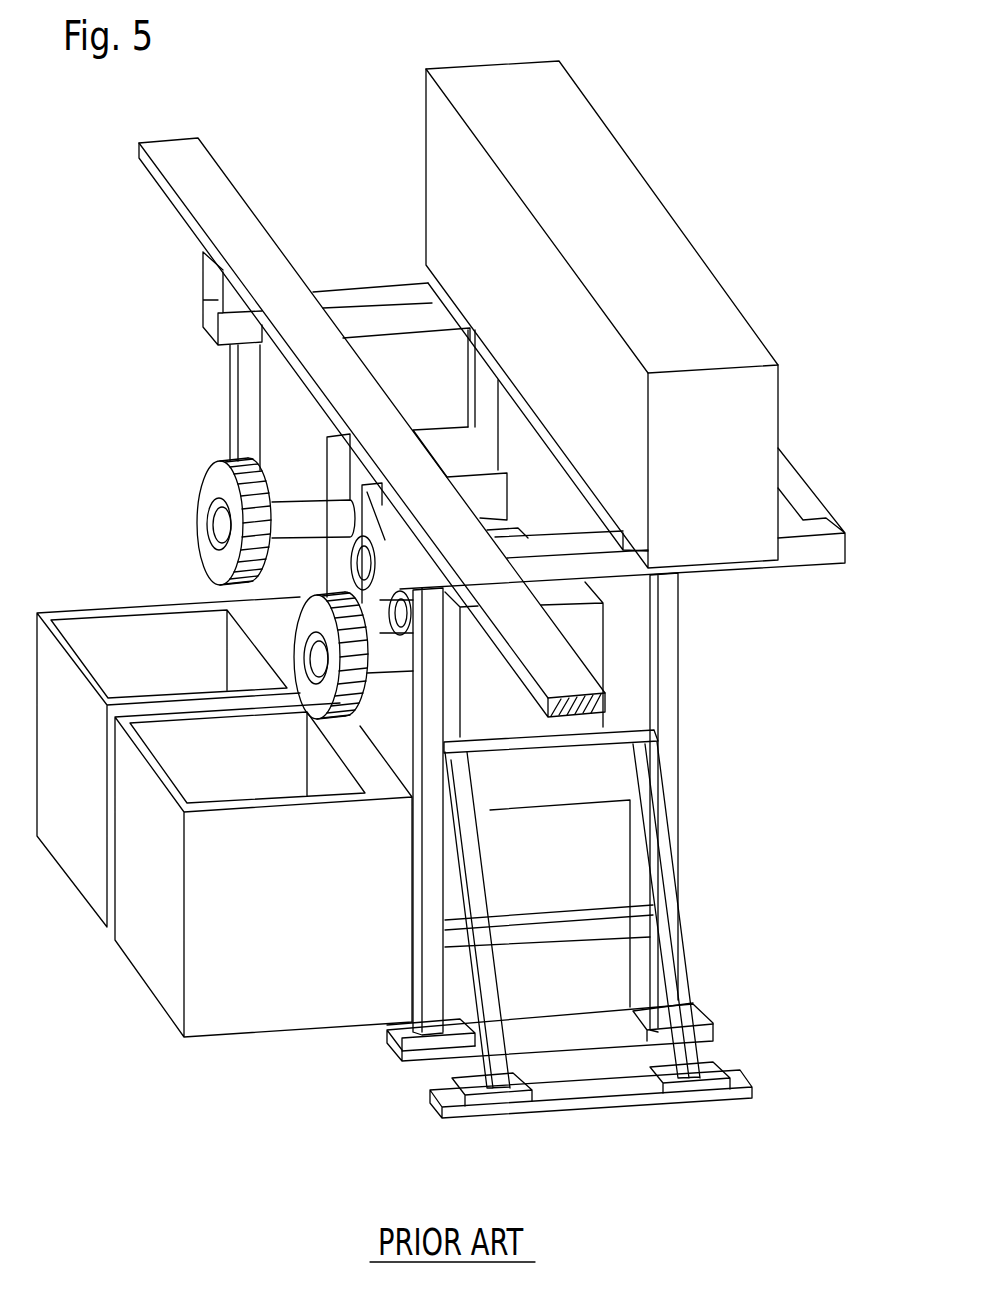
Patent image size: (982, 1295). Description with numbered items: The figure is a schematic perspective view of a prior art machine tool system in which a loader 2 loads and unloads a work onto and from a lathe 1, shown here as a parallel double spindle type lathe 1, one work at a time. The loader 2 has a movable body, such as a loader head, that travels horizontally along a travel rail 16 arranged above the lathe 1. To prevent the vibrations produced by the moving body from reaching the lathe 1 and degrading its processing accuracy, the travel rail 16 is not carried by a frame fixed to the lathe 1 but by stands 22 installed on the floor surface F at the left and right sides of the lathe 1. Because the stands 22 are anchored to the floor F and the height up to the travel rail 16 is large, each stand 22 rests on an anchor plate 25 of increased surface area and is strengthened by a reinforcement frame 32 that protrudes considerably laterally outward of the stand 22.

The lathe 1 is at (135, 340).
The loader 2 is at (283, 232).
The travel rail 16 is at (185, 222).
The stand 22 is at (706, 800).
The anchor plate 25 is at (555, 1048).
The reinforcement frame 32 is at (670, 932).
The floor F is at (290, 1150).